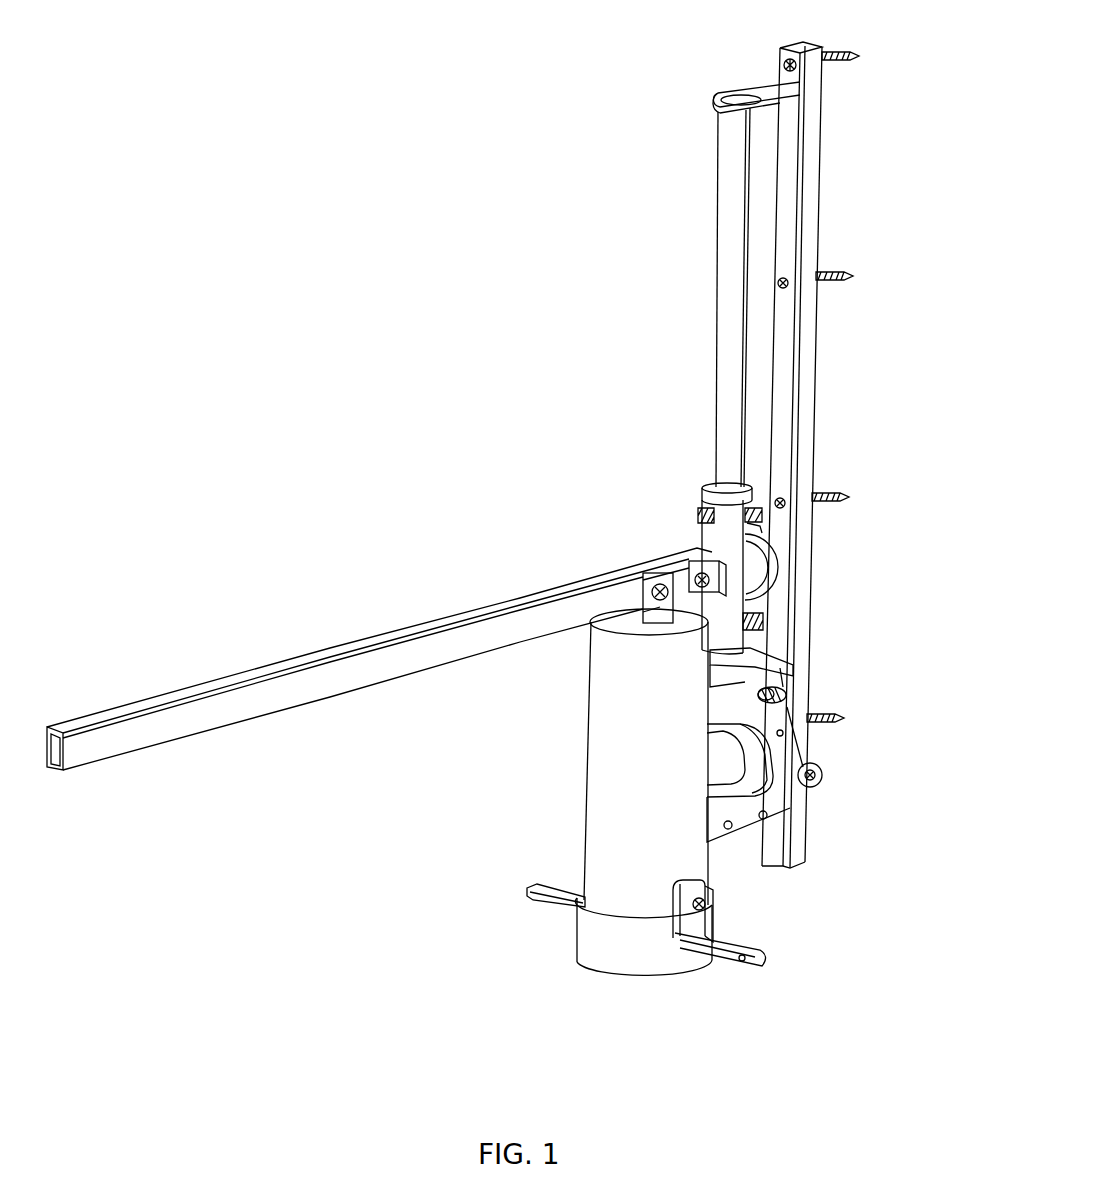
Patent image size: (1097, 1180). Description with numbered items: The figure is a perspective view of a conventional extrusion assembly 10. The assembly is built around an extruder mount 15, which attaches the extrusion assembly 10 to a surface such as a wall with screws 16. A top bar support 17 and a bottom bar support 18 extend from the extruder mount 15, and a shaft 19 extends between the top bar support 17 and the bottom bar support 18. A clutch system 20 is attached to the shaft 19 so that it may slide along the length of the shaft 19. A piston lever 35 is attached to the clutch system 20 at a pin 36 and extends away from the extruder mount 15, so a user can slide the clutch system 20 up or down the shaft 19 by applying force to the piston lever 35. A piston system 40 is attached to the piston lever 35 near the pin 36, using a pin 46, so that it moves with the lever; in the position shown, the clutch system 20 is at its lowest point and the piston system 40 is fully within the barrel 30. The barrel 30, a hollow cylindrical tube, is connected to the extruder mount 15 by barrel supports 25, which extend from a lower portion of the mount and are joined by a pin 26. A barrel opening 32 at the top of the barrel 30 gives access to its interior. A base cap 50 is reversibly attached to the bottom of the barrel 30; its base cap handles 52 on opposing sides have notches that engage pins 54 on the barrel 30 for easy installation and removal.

The extrusion assembly 10 is at (559, 240).
The extruder mount 15 is at (793, 347).
The screws 16 is at (860, 56).
The top bar support 17 is at (753, 88).
The shaft 19 is at (733, 196).
The clutch system 20 is at (700, 520).
The barrel opening 32 is at (680, 597).
The bottom bar support 18 is at (773, 684).
The barrel supports 25 is at (752, 748).
The pin 26 is at (815, 773).
The barrel 30 is at (607, 805).
The pin 46 is at (640, 617).
The pin 36 is at (698, 575).
The piston system 40 is at (636, 611).
The piston lever 35 is at (200, 713).
The base cap 50 is at (650, 955).
The pins 54 is at (703, 903).
The base cap handles 52 is at (543, 897).